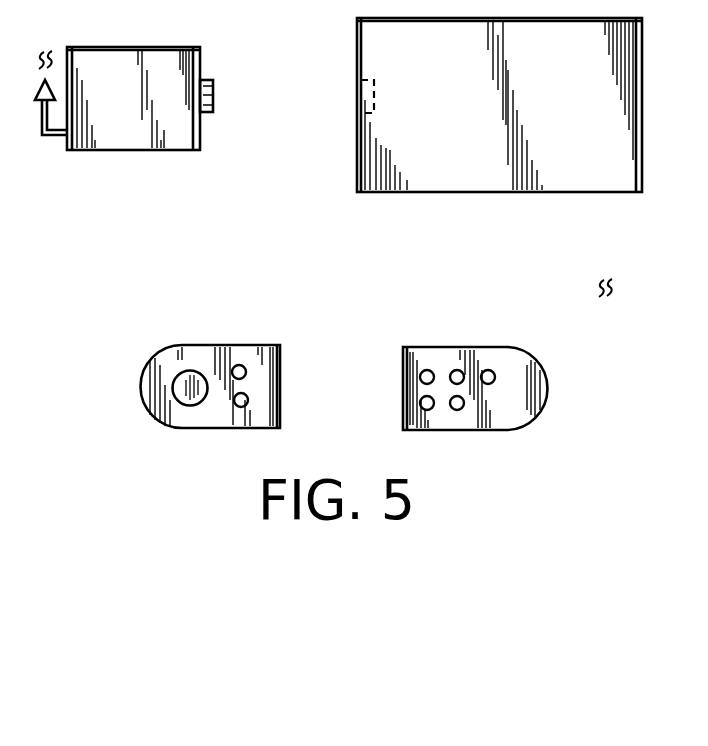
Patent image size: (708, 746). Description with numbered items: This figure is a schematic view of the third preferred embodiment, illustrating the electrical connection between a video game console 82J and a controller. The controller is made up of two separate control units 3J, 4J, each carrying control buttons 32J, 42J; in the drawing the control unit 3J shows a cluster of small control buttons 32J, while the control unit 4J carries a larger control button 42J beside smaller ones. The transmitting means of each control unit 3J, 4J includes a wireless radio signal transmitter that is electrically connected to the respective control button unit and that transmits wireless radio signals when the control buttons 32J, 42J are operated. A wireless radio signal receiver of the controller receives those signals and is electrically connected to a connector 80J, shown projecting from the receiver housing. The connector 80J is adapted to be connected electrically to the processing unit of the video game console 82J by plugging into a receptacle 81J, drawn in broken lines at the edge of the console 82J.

The connector 80J is at (213, 105).
The receptacle 81J is at (365, 98).
The video game console 82J is at (585, 172).
The control unit 4J is at (197, 424).
The control button 42J is at (180, 374).
The control unit 3J is at (462, 427).
The control button 32J is at (456, 370).